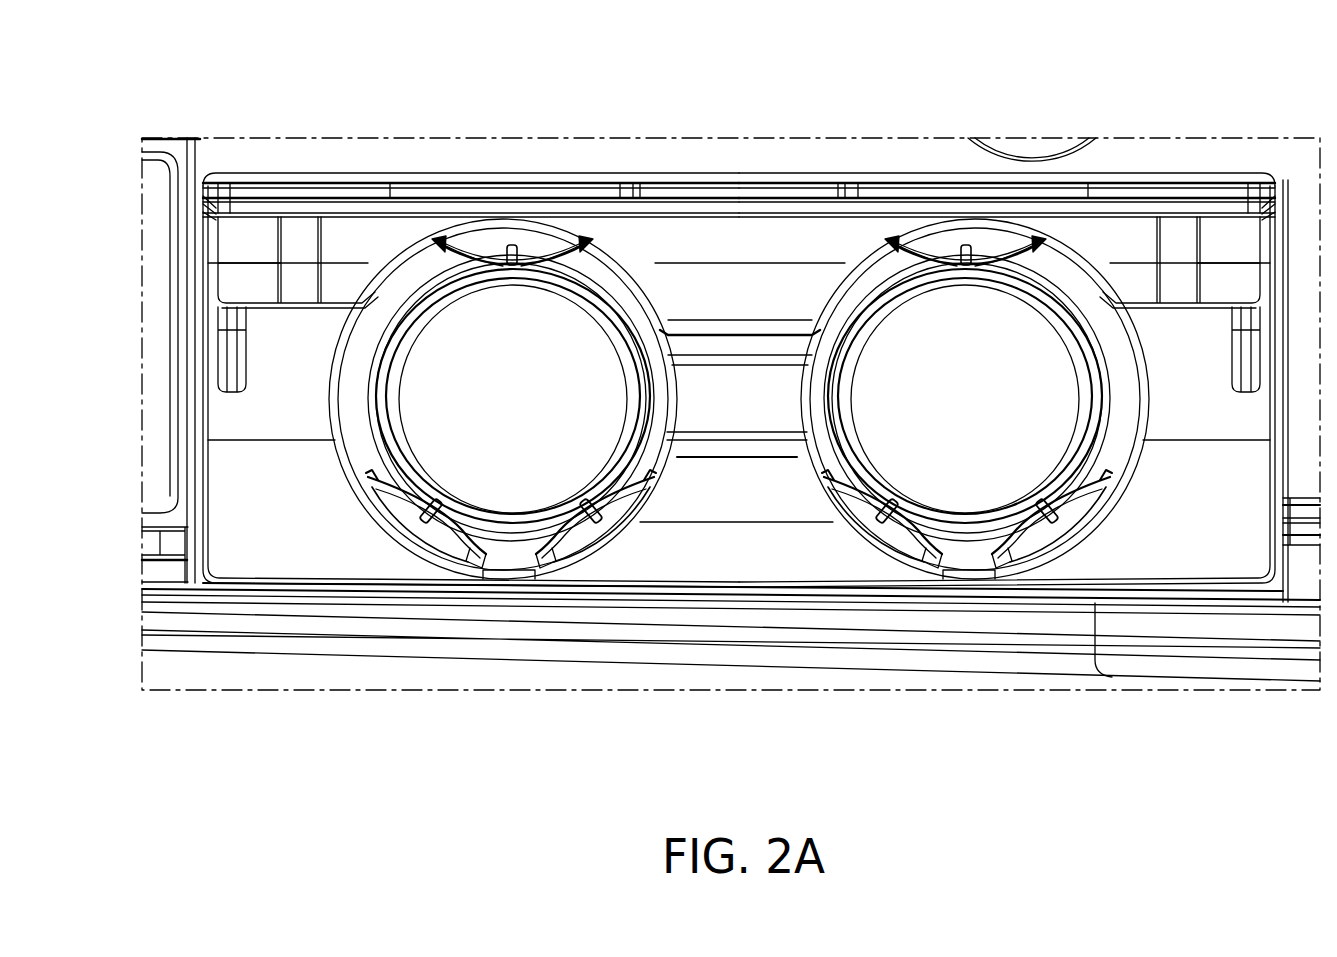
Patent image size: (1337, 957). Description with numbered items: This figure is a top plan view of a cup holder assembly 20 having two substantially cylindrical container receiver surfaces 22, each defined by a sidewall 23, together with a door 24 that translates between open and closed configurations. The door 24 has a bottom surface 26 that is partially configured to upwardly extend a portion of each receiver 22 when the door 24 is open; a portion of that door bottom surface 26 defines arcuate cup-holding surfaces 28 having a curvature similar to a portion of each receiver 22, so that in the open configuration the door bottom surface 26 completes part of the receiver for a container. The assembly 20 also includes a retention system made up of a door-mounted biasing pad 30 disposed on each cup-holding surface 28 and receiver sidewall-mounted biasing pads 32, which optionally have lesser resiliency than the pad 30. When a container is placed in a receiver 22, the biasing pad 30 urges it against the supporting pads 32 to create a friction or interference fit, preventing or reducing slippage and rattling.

The cup holder assembly 20 is at (765, 108).
The container receiver surface 22 is at (322, 466).
The sidewall 23 is at (502, 553).
The door 24 is at (313, 188).
The bottom surface 26 is at (744, 314).
The arcuate cup-holding surface 28 is at (612, 258).
The door-mounted biasing pad 30 is at (497, 255).
The receiver sidewall-mounted biasing pad 32 is at (418, 507).